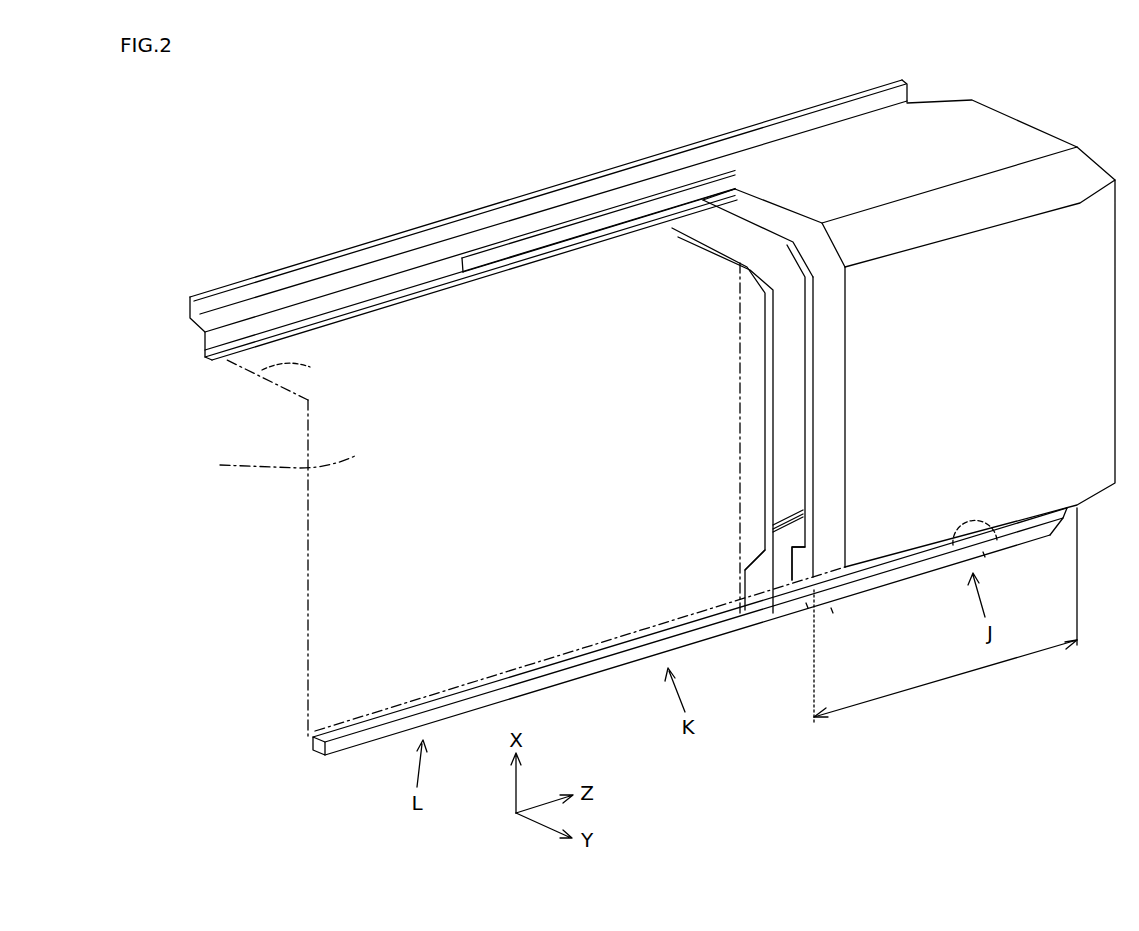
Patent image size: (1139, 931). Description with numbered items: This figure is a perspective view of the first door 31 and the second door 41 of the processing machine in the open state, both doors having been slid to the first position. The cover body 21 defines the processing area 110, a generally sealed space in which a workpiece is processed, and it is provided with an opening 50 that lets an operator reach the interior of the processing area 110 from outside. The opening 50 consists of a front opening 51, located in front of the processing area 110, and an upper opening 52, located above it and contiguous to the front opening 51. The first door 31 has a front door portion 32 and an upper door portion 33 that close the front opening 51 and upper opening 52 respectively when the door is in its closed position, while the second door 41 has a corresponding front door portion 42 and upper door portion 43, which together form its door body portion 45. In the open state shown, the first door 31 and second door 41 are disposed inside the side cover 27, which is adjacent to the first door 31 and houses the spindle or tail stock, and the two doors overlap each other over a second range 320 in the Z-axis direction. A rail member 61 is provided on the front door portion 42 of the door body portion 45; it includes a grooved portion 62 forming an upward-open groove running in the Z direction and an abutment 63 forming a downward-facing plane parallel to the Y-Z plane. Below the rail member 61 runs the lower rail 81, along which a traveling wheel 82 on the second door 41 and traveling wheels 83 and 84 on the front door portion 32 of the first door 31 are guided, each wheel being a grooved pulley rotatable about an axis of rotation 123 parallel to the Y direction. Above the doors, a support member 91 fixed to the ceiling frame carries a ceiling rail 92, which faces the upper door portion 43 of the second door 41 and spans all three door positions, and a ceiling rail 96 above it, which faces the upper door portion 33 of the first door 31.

The cover body 21 is at (715, 395).
The side cover 27 is at (985, 122).
The first door 31 is at (810, 343).
The front door portion 32 is at (836, 478).
The upper door portion 33 is at (785, 220).
The second door 41 is at (687, 228).
The front door portion 42 is at (787, 353).
The upper door portion 43 is at (698, 225).
The door body portion 45 is at (702, 321).
The opening 50 is at (254, 419).
The front opening 51 is at (273, 465).
The upper opening 52 is at (257, 377).
The rail member 61 is at (750, 611).
The grooved portion 62 is at (750, 611).
The abutment 63 is at (789, 514).
The lower rail 81 is at (630, 665).
The traveling wheel 82 is at (757, 618).
The traveling wheel 83 is at (835, 578).
The traveling wheel 84 is at (1007, 538).
The support member 91 is at (221, 292).
The ceiling rail 92 is at (368, 305).
The ceiling rail 96 is at (573, 228).
The processing area 110 is at (288, 550).
The axis of rotation 123 is at (808, 608).
The second range 320 is at (944, 681).